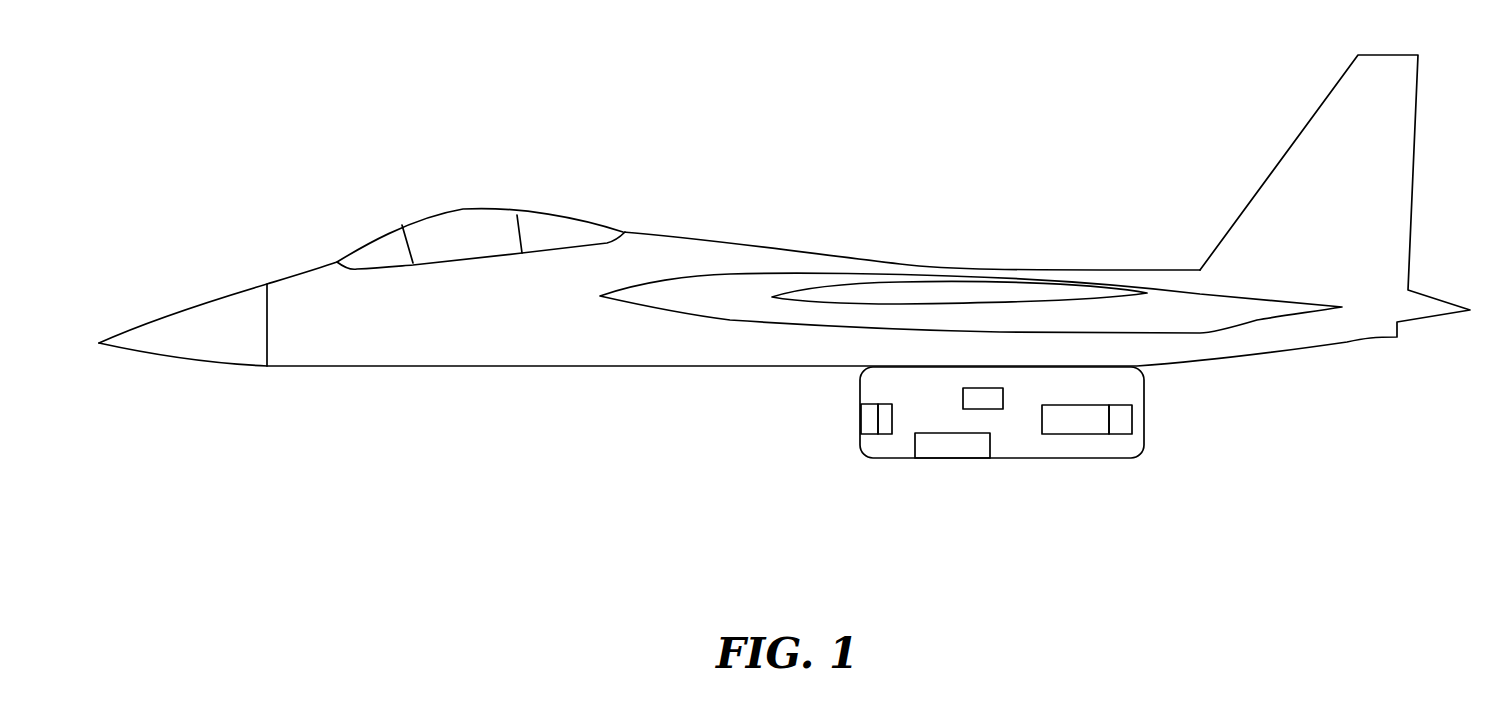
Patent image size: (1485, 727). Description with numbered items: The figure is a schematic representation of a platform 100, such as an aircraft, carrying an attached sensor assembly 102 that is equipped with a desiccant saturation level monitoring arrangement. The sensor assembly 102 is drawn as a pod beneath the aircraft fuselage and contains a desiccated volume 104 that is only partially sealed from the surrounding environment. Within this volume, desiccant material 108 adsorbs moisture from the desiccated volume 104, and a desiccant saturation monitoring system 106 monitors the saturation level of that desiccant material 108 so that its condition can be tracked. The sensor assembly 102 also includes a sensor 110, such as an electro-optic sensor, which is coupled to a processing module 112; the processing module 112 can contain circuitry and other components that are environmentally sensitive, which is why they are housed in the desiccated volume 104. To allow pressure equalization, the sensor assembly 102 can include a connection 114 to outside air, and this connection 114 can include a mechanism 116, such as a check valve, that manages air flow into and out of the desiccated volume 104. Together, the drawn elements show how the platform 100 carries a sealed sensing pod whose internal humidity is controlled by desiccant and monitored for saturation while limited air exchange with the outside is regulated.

The platform 100 is at (622, 135).
The sensor assembly 102 is at (1133, 462).
The desiccated volume 104 is at (1054, 394).
The desiccant saturation monitoring system 106 is at (1120, 417).
The desiccant material 108 is at (1072, 424).
The sensor 110 is at (932, 452).
The processing module 112 is at (992, 403).
The connection 114 is at (867, 426).
The mechanism 116 is at (887, 427).